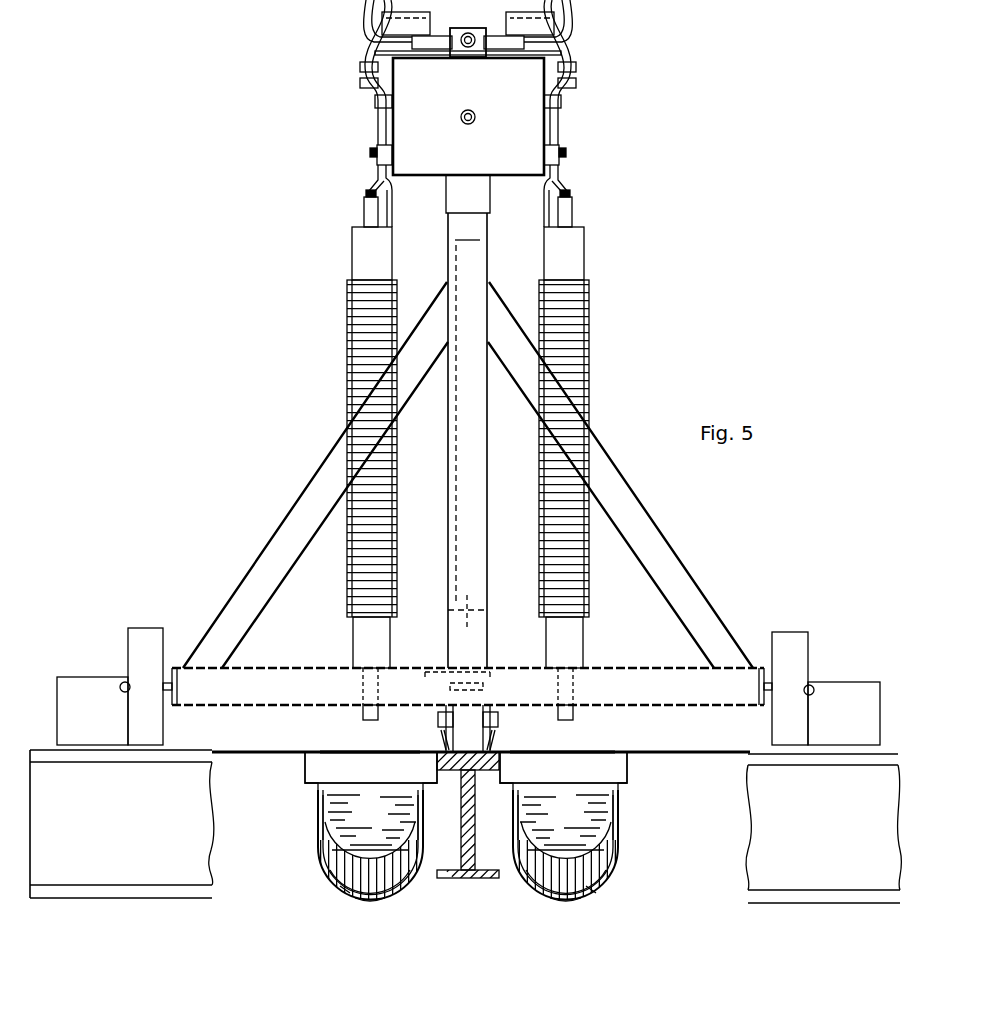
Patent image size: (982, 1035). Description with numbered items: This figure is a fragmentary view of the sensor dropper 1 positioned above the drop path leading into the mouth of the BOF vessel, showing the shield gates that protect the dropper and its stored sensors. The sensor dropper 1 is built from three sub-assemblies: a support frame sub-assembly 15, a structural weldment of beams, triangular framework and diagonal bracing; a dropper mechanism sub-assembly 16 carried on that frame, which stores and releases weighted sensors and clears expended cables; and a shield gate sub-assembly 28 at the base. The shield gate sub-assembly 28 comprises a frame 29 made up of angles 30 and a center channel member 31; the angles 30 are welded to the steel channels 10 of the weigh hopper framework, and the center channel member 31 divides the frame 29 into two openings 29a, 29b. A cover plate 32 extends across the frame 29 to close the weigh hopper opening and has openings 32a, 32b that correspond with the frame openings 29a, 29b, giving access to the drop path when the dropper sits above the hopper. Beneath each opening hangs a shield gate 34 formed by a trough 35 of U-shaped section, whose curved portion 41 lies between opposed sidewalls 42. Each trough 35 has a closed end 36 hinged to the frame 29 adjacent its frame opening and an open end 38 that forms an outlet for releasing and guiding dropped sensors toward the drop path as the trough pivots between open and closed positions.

The sensor dropper 1 is at (616, 191).
The steel channels 10 is at (798, 858).
The support frame sub-assembly 15 is at (241, 468).
The dropper mechanism sub-assembly 16 is at (306, 117).
The shield gate sub-assembly 28 is at (306, 874).
The frame 29 is at (634, 788).
The frame opening 29a is at (352, 762).
The frame opening 29b is at (588, 768).
The angles 30 is at (300, 773).
The center channel member 31 is at (427, 765).
The cover plate 32 is at (250, 745).
The cover plate opening 32a is at (350, 760).
The cover plate opening 32b is at (528, 752).
The shield gate 34 is at (316, 860).
The trough 35 is at (384, 829).
The closed end 36 is at (320, 805).
The open end 38 is at (530, 912).
The curved portion 41 is at (635, 899).
The sidewalls 42 is at (318, 838).